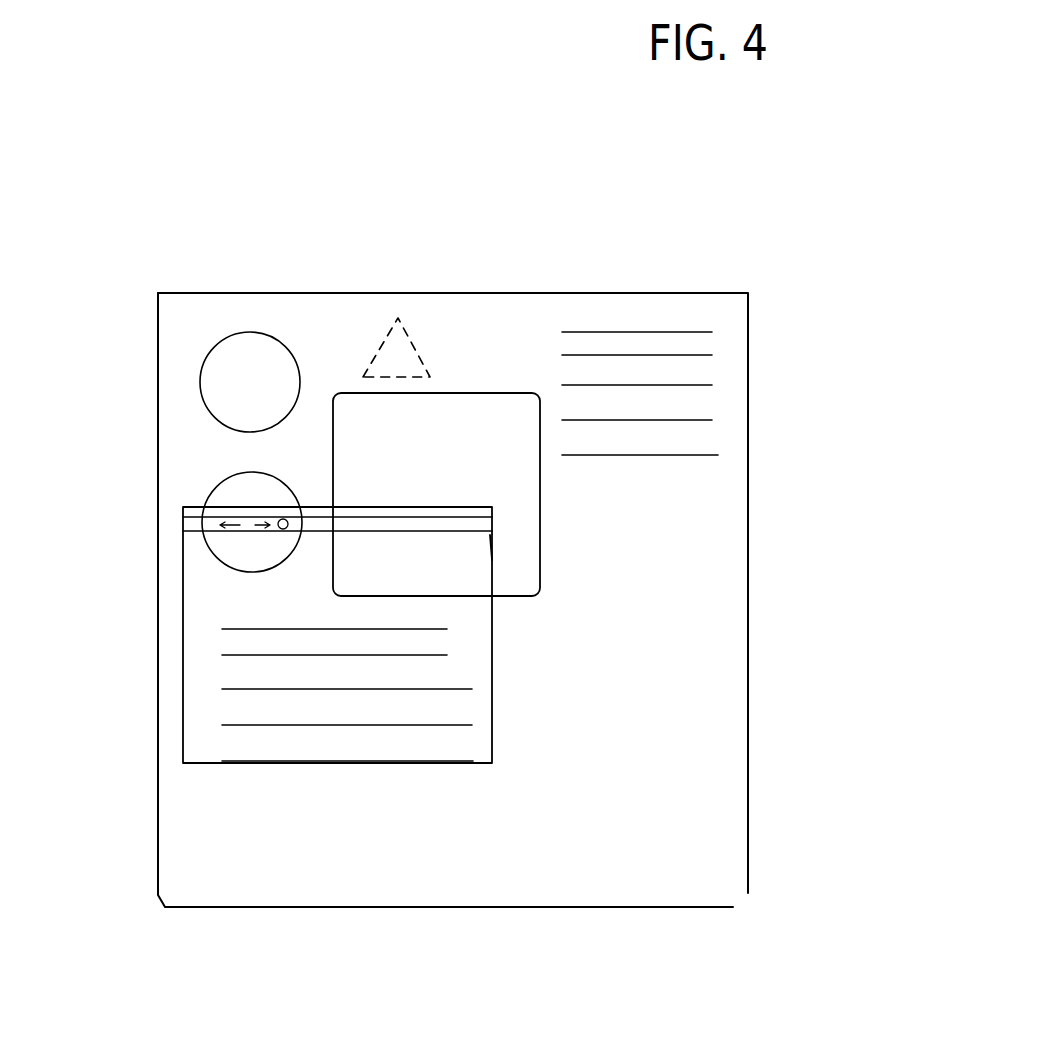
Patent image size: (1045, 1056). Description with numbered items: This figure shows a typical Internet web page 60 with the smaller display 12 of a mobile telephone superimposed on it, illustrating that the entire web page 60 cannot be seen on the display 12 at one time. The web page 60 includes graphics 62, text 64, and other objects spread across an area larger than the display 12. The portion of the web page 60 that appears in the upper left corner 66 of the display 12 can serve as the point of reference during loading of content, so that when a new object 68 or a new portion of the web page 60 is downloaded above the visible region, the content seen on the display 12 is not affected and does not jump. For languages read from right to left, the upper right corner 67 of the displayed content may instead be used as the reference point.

The display 12 is at (193, 596).
The web page 60 is at (748, 685).
The graphics 62 is at (212, 373).
The text 64 is at (717, 342).
The upper left corner 66 is at (187, 543).
The upper right corner 67 is at (475, 552).
The new object 68 is at (400, 352).